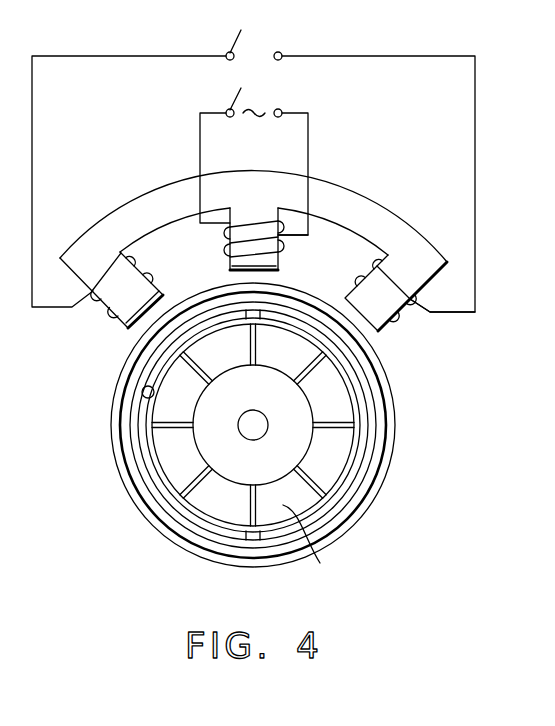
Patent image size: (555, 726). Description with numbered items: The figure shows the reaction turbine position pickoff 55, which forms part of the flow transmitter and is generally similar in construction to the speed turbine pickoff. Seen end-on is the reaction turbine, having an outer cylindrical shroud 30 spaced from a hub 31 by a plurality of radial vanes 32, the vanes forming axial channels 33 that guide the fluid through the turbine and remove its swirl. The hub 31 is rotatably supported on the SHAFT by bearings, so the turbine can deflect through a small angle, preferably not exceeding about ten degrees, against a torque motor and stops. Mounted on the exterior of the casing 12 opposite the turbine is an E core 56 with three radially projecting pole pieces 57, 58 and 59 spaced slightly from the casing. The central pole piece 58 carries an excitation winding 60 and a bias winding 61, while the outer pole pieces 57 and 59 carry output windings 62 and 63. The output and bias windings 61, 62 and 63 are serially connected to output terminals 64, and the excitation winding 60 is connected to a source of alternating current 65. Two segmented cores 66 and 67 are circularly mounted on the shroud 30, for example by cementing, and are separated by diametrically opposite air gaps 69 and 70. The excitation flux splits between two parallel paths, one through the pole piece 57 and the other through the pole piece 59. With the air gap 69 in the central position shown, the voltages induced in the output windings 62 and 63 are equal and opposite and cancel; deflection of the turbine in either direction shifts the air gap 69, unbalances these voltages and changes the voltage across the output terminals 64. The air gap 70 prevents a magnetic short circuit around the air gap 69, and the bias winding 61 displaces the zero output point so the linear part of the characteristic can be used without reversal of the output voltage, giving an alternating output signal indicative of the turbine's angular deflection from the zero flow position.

The casing 12 is at (395, 390).
The outer cylindrical shroud 30 is at (347, 402).
The hub 31 is at (235, 488).
The radial vanes 32 is at (310, 470).
The axial channels 33 is at (315, 541).
The reaction turbine position pickoff 55 is at (133, 203).
The E core 56 is at (447, 262).
The pole piece 57 is at (100, 308).
The central pole piece 58 is at (282, 255).
The pole piece 59 is at (383, 332).
The excitation winding 60 is at (290, 228).
The bias winding 61 is at (227, 257).
The output winding 62 is at (113, 327).
The output winding 63 is at (412, 304).
The output terminals 64 is at (278, 52).
The source of alternating current 65 is at (278, 110).
The segmented core 66 is at (154, 395).
The segmented core 67 is at (357, 382).
The air gap 69 is at (254, 310).
The air gap 70 is at (253, 547).
The shaft SHAFT is at (263, 438).